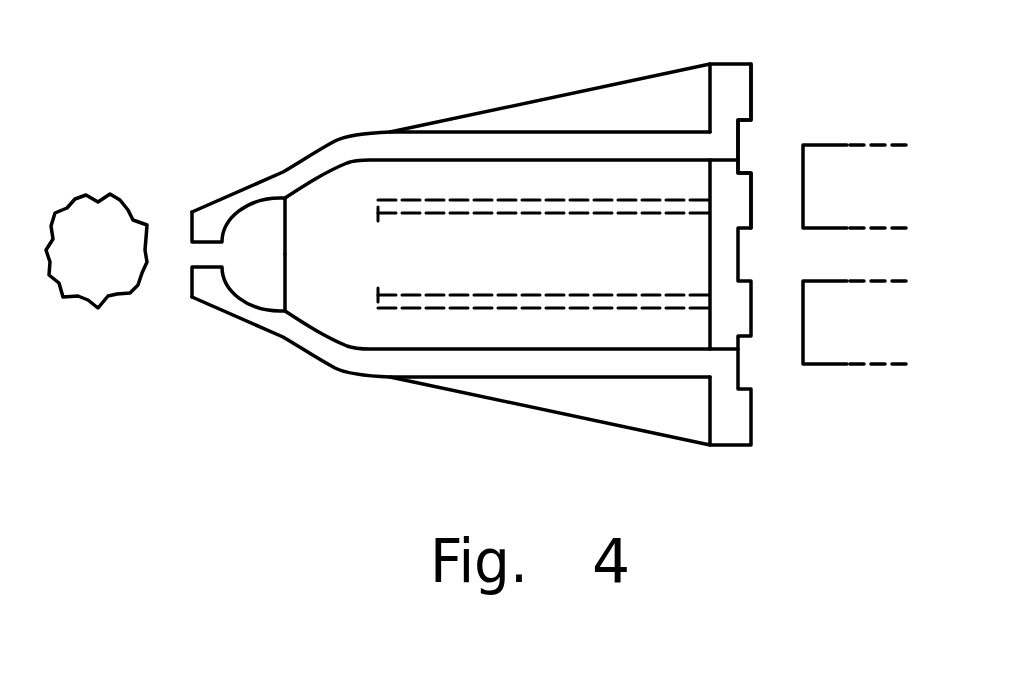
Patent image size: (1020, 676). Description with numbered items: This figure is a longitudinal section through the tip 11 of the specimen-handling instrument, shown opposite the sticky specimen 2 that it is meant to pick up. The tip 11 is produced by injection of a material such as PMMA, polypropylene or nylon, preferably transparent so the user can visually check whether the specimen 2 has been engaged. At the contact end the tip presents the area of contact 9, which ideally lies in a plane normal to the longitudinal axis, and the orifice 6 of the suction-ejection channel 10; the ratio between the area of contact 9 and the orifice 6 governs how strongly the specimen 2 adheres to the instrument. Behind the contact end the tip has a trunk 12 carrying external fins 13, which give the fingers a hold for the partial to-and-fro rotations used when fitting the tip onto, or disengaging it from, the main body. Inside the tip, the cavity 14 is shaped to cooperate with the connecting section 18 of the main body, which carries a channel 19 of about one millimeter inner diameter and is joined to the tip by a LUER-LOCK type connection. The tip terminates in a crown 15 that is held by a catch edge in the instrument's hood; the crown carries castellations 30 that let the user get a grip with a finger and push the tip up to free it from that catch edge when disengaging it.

The specimen 2 is at (96, 251).
The orifice 6 is at (200, 255).
The area of contact 9 is at (190, 227).
The suction-ejection channel 10 is at (212, 260).
The tip 11 is at (465, 148).
The trunk 12 is at (431, 408).
The external fins 13 is at (618, 305).
The cavity 14 is at (540, 162).
The crown 15 is at (728, 430).
The connecting section 18 is at (855, 254).
The channel 19 is at (855, 254).
The castellations 30 is at (752, 197).